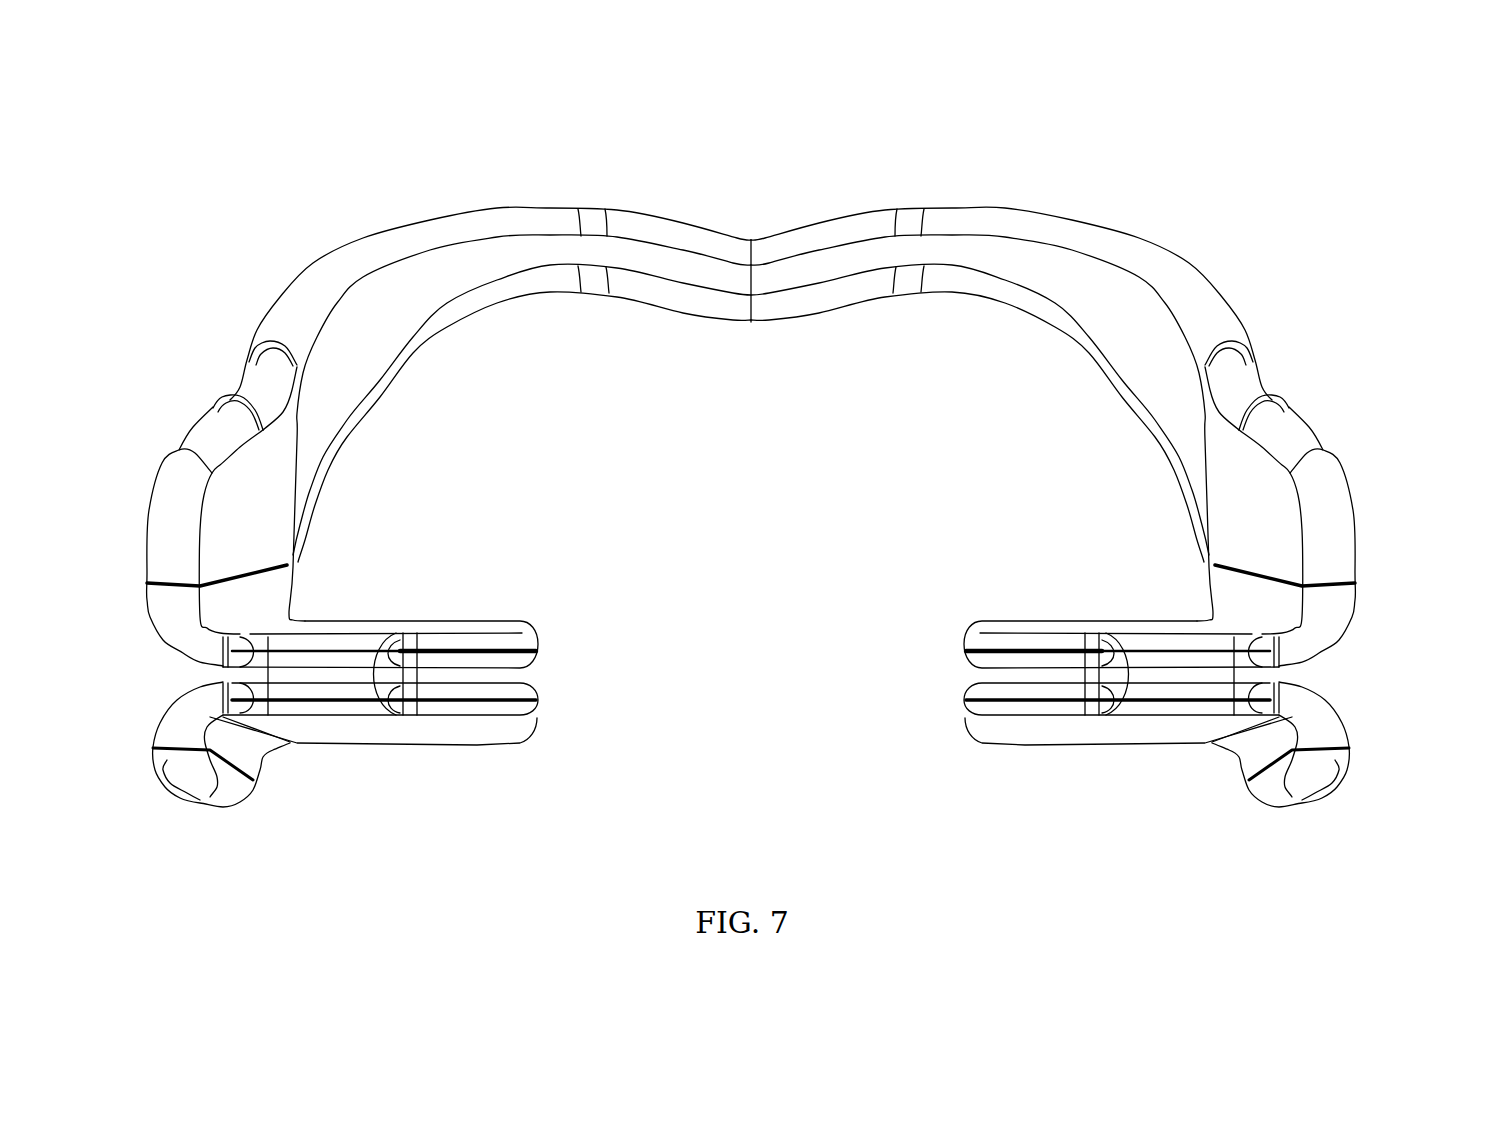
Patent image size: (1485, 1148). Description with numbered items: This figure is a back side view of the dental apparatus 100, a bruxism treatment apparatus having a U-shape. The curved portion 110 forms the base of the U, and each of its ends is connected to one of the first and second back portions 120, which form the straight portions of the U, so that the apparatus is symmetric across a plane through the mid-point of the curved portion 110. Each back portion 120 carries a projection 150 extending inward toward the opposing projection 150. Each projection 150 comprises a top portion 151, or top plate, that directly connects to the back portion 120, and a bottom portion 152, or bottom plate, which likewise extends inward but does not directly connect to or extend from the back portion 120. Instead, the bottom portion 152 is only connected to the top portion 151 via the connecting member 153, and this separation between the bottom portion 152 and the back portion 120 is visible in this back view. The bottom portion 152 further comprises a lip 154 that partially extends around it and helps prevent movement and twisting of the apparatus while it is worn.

The dental apparatus 100 is at (1197, 163).
The curved portion 110 is at (950, 260).
The back portions 120 is at (172, 515).
The projections 150 is at (757, 655).
The top portion 151 is at (407, 627).
The bottom portion 152 is at (480, 735).
The connecting member 153 is at (317, 680).
The lip 154 is at (173, 760).